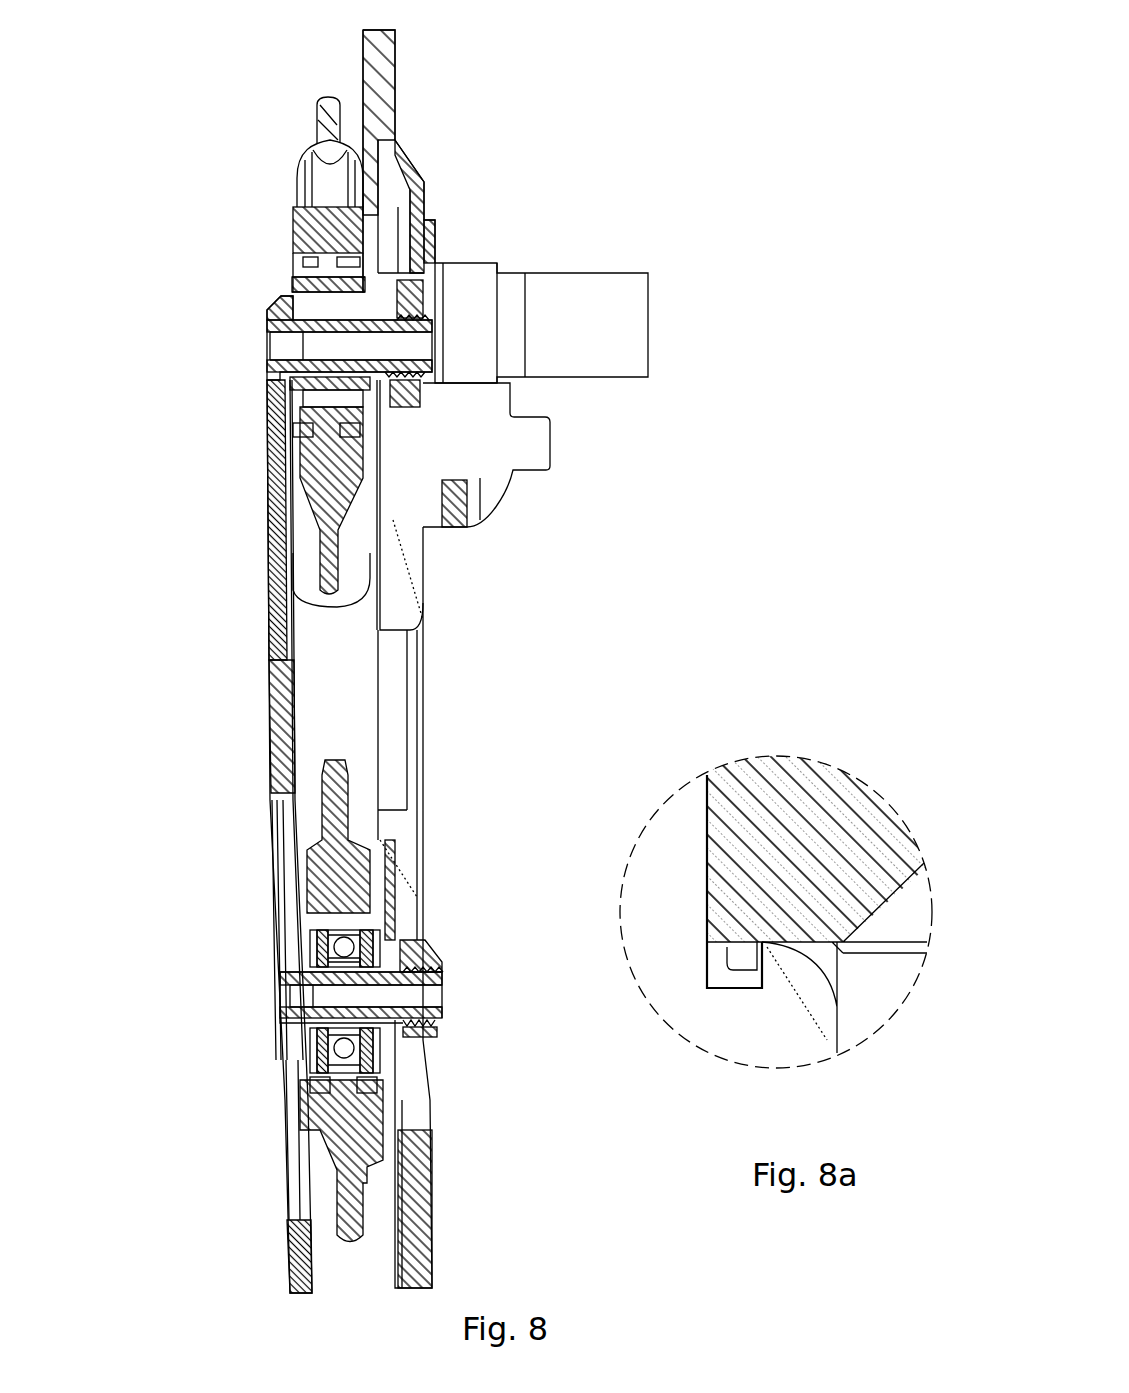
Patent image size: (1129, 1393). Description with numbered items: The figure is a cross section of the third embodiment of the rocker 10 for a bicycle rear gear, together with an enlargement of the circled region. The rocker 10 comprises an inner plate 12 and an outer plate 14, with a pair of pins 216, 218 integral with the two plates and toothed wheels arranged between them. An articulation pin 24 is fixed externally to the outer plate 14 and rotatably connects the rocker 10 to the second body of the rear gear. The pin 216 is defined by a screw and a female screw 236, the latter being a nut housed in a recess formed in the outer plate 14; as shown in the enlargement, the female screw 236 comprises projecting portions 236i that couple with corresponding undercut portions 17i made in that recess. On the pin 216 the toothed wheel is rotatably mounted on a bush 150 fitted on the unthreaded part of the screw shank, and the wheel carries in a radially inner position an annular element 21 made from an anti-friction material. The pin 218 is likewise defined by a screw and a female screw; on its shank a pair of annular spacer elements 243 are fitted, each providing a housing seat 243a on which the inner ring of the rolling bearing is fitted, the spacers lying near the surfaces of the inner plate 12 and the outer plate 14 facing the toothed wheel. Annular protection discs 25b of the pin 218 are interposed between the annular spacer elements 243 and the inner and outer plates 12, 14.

In FIG. 8, the rocker 10 is at (245, 155).
In FIG. 8, the inner plate 12 is at (262, 662).
In FIG. 8, the outer plate 14 is at (437, 657).
In FIG. 8A, the outer plate 14 is at (682, 936).
In FIG. 8, the annular element 21 is at (340, 293).
In FIG. 8, the articulation pin 24 is at (602, 348).
In FIG. 8, the bush 150 is at (330, 317).
In FIG. 8, the pin 216 is at (240, 317).
In FIG. 8, the pin 218 is at (260, 987).
In FIG. 8, the annular spacer elements 243 is at (303, 970).
In FIG. 8, the housing seats 243a is at (357, 960).
In FIG. 8, the annular protection discs 25b is at (387, 1073).
In FIG. 8A, the female screw 236 is at (792, 847).
In FIG. 8A, the projecting portions 236i is at (737, 957).
In FIG. 8A, the undercut portions 17i is at (783, 978).